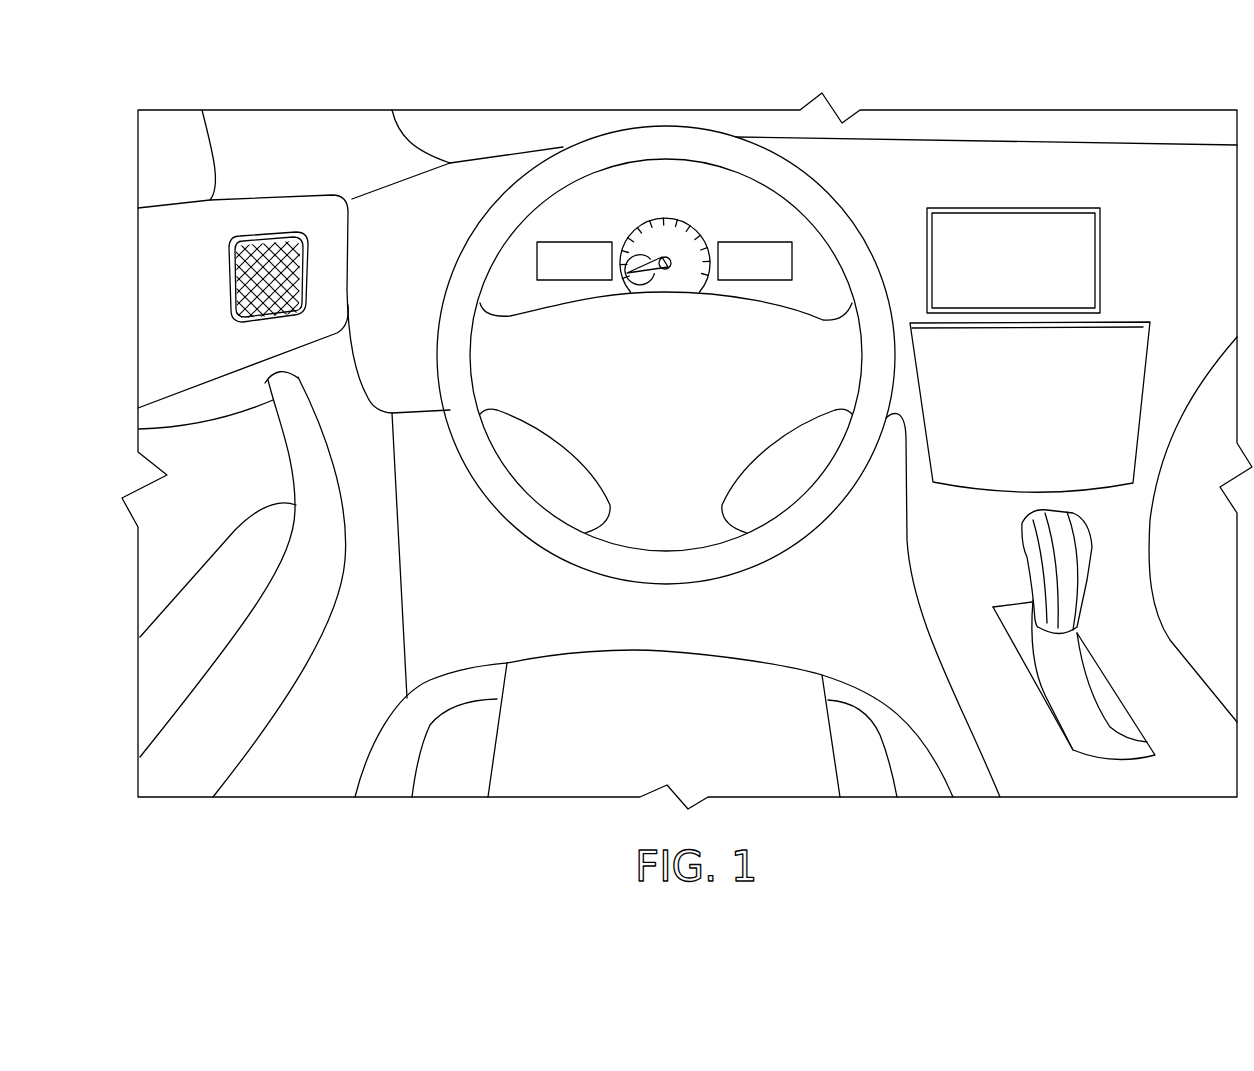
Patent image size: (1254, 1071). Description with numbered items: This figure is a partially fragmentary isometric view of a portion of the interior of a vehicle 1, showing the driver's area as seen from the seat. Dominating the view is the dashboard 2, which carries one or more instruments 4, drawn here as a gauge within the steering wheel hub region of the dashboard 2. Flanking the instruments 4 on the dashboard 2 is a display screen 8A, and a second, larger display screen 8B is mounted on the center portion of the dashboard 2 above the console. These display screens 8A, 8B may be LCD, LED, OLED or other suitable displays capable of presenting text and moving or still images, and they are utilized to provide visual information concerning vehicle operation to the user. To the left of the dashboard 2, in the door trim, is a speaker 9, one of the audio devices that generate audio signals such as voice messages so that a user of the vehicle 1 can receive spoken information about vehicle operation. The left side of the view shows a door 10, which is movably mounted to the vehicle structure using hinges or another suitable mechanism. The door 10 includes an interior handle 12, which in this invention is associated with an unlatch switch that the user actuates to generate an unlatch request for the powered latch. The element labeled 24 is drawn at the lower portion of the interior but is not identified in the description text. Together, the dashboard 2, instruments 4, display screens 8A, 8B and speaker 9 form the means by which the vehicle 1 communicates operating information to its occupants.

The vehicle 1 is at (900, 108).
The dashboard 2 is at (670, 177).
The instruments 4 is at (647, 217).
The display screen 8A is at (727, 238).
The display screen 8B is at (1007, 220).
The speaker 9 is at (277, 250).
The door 10 is at (153, 542).
The interior handle 12 is at (150, 430).
The seat 24 is at (423, 663).